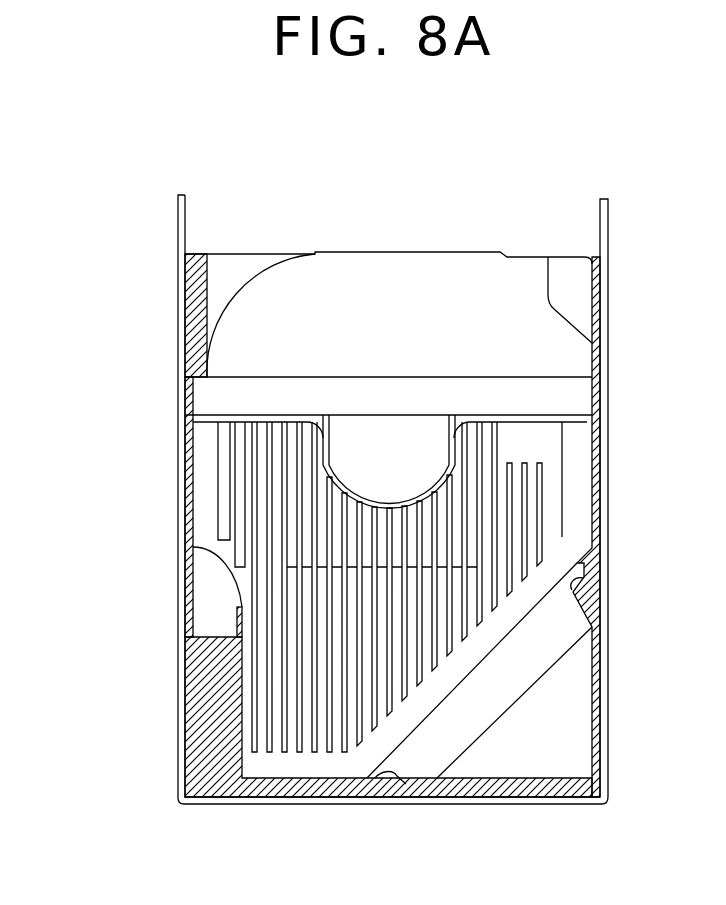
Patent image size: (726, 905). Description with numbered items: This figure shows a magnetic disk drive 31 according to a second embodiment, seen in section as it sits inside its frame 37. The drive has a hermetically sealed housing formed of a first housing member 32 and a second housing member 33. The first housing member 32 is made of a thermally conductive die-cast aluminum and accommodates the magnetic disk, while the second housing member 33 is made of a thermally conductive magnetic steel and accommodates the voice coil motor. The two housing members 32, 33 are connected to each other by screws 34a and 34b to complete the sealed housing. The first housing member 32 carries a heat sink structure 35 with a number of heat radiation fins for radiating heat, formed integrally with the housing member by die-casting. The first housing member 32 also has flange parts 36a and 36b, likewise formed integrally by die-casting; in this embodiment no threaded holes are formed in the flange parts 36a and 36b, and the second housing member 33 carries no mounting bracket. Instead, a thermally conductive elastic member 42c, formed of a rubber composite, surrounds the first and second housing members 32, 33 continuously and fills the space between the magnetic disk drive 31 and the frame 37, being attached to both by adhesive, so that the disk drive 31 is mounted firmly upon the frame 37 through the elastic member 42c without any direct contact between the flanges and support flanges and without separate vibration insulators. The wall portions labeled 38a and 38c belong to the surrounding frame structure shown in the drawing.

The magnetic disk drive 31 is at (397, 240).
The first housing member 32 is at (585, 434).
The second housing member 33 is at (579, 677).
The screw 34a is at (580, 585).
The screw 34b is at (393, 780).
The heat sink structure 35 is at (575, 483).
The flange part 36a is at (186, 594).
The flange part 36b is at (567, 270).
The frame 37 is at (614, 205).
The housing case 38a is at (179, 243).
The housing side wall 38c is at (609, 236).
The thermally conductive elastic member 42c is at (186, 746).